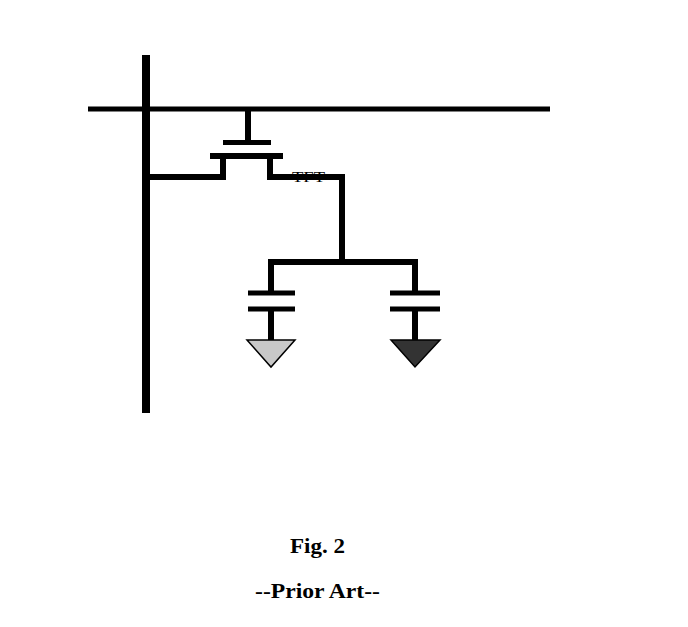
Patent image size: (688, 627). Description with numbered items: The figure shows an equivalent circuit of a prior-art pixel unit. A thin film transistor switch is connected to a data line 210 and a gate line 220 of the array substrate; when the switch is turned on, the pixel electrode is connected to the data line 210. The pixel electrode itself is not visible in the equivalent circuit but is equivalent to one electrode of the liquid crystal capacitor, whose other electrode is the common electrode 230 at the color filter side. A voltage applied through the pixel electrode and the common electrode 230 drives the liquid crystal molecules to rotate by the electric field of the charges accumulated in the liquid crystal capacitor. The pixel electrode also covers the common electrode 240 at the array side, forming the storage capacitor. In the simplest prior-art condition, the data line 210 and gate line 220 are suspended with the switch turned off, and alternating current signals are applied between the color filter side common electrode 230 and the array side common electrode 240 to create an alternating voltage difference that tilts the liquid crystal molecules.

The data line 210 is at (142, 107).
The gate line 220 is at (87, 155).
The common electrode CF Com 230 is at (262, 393).
The common electrode A Com 240 is at (408, 393).